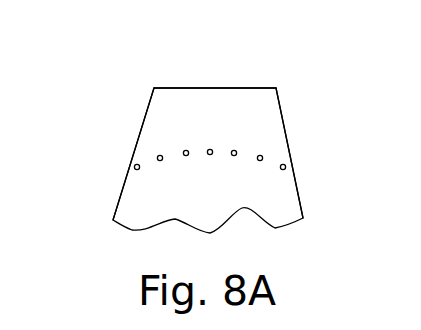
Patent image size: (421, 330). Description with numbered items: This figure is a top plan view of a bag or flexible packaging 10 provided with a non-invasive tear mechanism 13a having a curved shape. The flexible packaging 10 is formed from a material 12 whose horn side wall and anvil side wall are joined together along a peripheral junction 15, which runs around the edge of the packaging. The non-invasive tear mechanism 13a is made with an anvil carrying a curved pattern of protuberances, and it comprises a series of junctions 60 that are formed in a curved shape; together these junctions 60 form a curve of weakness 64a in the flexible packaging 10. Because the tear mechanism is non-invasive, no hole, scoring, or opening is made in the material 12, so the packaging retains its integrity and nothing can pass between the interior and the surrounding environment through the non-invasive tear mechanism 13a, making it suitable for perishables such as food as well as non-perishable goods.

The flexible packaging 10 is at (240, 98).
The material 12 is at (168, 98).
The peripheral junction 15 is at (193, 88).
The non-invasive tear mechanism 13a is at (237, 148).
The curve of weakness 64a is at (157, 153).
The junctions 60 is at (263, 155).